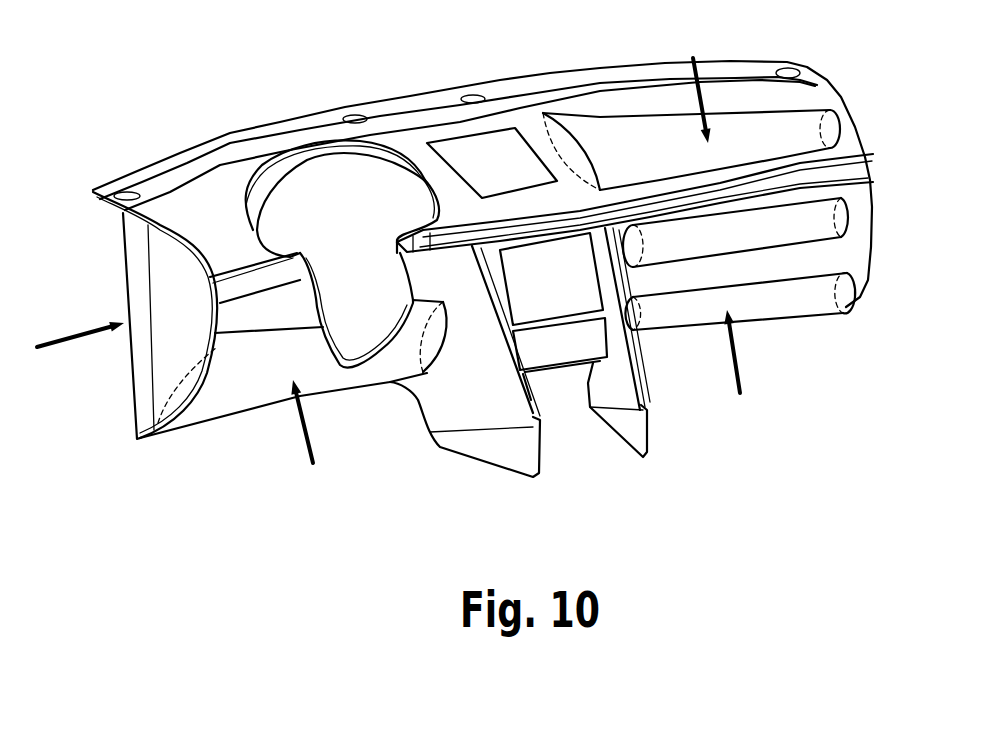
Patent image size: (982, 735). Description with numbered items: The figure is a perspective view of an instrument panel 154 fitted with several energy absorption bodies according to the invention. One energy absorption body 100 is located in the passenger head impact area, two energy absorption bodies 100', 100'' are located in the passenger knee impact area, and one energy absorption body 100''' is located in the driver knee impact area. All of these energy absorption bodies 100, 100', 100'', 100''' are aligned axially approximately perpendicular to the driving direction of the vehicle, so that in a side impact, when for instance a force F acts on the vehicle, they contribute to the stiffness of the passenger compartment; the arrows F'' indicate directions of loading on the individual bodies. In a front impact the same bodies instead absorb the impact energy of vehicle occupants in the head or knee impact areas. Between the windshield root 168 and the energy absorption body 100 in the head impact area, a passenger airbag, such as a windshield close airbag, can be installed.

The instrument panel 154 is at (232, 101).
The windshield root 168 is at (537, 72).
The energy absorption body 100 is at (691, 96).
The energy absorption body 100' is at (760, 283).
The energy absorption body 100'' is at (740, 338).
The energy absorption body 100''' is at (321, 402).
The force F is at (80, 315).
The air flow direction F'' is at (556, 231).